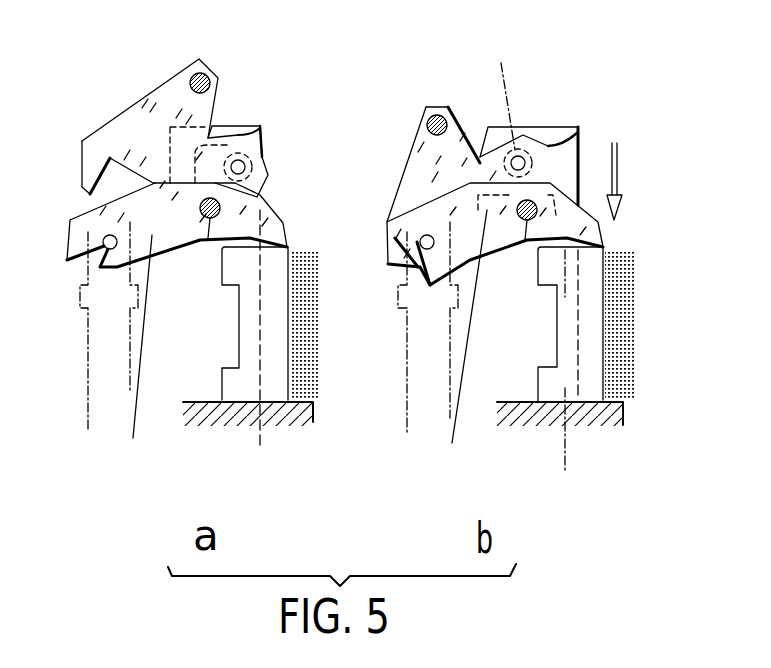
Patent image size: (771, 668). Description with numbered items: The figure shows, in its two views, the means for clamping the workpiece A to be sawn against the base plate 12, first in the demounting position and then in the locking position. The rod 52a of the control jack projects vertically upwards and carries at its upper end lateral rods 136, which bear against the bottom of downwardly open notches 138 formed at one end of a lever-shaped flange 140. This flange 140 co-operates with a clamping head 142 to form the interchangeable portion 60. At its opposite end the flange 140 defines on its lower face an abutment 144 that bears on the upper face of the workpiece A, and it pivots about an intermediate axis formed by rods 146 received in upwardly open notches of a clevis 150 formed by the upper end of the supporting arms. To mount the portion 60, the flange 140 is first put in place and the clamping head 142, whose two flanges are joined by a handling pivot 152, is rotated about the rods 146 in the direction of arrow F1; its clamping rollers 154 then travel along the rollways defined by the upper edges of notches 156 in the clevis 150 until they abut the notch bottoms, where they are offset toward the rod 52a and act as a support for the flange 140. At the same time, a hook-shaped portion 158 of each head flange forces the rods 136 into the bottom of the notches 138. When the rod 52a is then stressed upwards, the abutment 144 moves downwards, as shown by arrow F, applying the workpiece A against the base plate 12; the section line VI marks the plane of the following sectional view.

The interchangeable portion 60 is at (119, 118).
The handling pivot 152 is at (200, 77).
The clamping head 142 is at (130, 147).
The notch 156 is at (258, 152).
The clamping roller 154 is at (242, 166).
The hook-shaped portion 158 is at (88, 174).
The downwardly open notch 138 is at (72, 260).
The abutment 144 is at (278, 242).
The rod 146 is at (210, 234).
The lateral rod 136 is at (106, 250).
The lever-shaped flange 140 is at (147, 238).
The rod of the jack 52a is at (406, 403).
The base plate 12 is at (220, 410).
The clevis 150 is at (132, 411).
The workpiece A is at (300, 408).
The arrow F is at (620, 166).
The arrow F1 is at (187, 80).
The section line VI is at (552, 87).